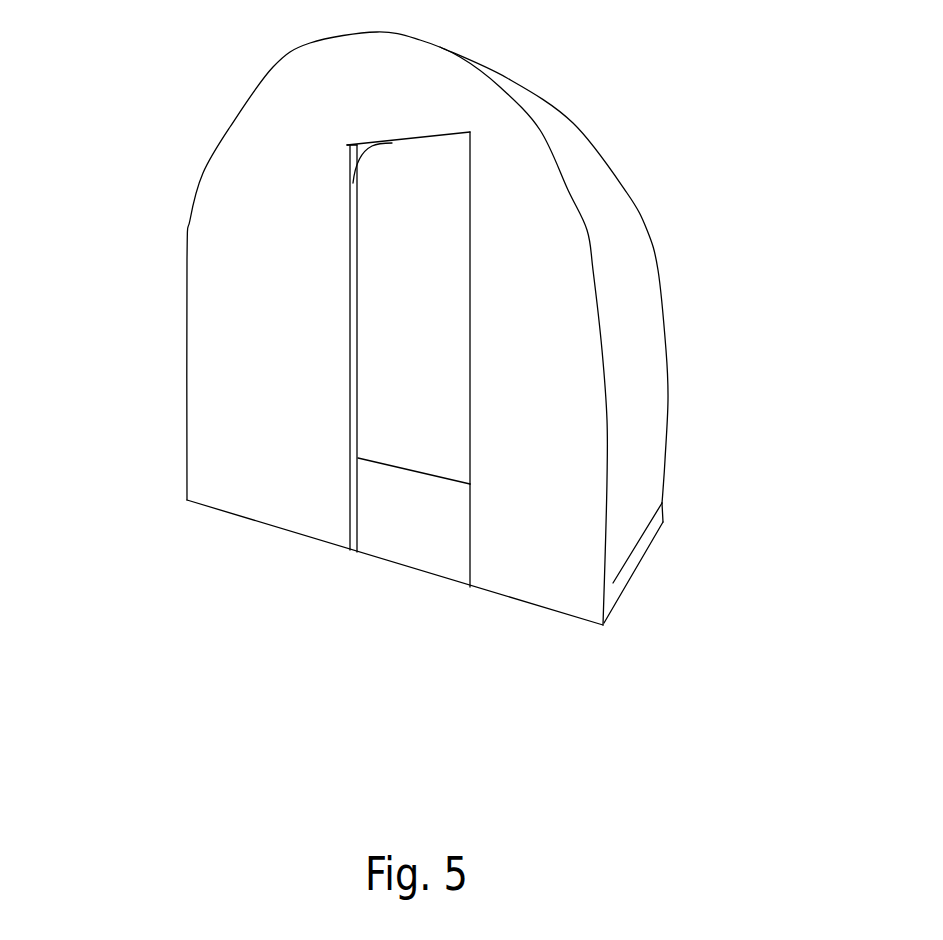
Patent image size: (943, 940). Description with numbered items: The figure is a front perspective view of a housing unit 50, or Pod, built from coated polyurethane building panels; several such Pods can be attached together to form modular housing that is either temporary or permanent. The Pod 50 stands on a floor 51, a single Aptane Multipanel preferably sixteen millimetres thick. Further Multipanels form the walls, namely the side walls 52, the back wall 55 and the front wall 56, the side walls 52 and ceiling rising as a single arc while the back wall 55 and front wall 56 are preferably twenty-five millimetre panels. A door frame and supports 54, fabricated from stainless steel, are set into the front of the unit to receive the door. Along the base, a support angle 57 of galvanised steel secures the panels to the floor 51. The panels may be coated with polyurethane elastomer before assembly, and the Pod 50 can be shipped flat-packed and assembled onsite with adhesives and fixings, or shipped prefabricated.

The unit 50 is at (676, 294).
The floor 51 is at (415, 547).
The side walls 52 is at (649, 390).
The door frame and supports 54 is at (352, 215).
The back wall 55 is at (405, 302).
The front wall 56 is at (258, 420).
The support angle to base 57 is at (617, 588).